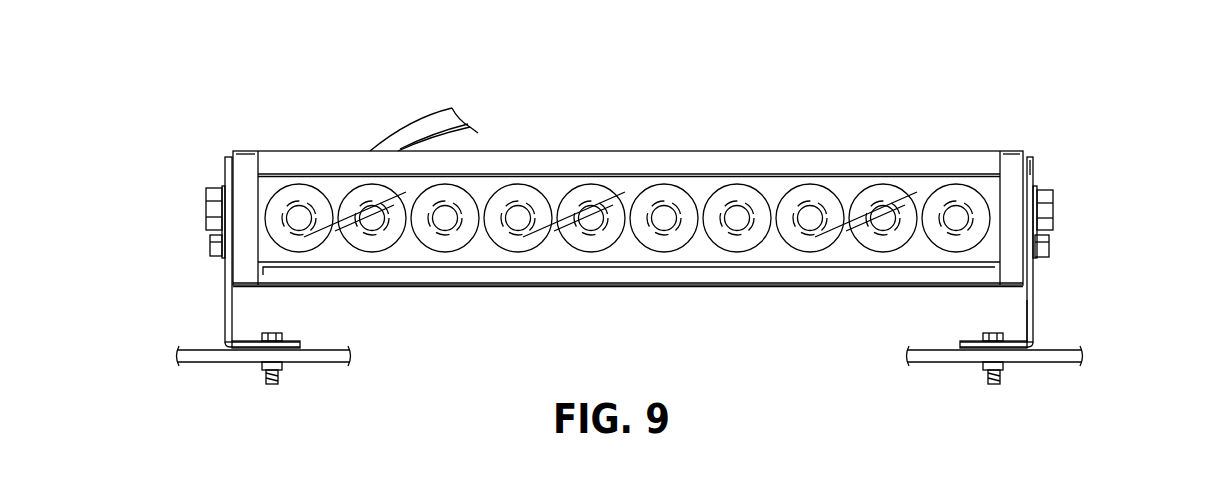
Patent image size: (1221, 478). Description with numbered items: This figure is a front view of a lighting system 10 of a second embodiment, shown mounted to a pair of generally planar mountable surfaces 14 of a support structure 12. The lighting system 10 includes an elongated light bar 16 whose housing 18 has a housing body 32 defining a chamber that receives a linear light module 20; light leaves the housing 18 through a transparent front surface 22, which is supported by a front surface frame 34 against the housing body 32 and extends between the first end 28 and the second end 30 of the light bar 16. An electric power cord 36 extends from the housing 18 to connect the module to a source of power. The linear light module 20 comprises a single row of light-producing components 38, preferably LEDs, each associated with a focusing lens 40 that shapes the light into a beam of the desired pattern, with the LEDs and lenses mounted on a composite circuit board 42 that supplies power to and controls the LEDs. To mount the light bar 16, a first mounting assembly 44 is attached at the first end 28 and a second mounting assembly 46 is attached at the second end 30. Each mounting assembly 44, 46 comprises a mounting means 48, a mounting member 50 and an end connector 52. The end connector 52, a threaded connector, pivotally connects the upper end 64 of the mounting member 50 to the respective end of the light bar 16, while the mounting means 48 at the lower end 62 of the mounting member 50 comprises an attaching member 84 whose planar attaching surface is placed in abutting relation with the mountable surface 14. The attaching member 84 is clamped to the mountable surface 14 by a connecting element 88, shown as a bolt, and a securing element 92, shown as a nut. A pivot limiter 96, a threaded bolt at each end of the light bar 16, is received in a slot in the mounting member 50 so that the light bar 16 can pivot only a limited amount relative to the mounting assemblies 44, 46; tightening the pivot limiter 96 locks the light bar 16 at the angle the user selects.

The lighting system 10 is at (1116, 97).
The support structure 12 is at (212, 357).
The mountable surface 14 is at (196, 349).
The elongated light bar 16 is at (906, 147).
The housing 18 is at (579, 291).
The linear light module 20 is at (759, 257).
The transparent front surface 22 is at (850, 210).
The first end 28 is at (232, 144).
The second end 30 is at (1026, 136).
The housing body 32 is at (322, 151).
The front surface frame 34 is at (478, 272).
The electric power cord 36 is at (430, 128).
The light-producing components (LEDs) 38 is at (668, 208).
The focusing lens 40 is at (736, 190).
The composite circuit board 42 is at (557, 190).
The first mounting assembly 44 is at (212, 187).
The second mounting assembly 46 is at (1063, 187).
The mounting means 48 is at (965, 343).
The mounting member 50 is at (228, 303).
The end connector 52 is at (207, 210).
The lower end 62 is at (1020, 339).
The upper end 64 is at (1039, 158).
The attaching member 84 is at (292, 347).
The connecting element 88 is at (274, 332).
The securing element 92 is at (285, 368).
The pivot limiter 96 is at (212, 245).